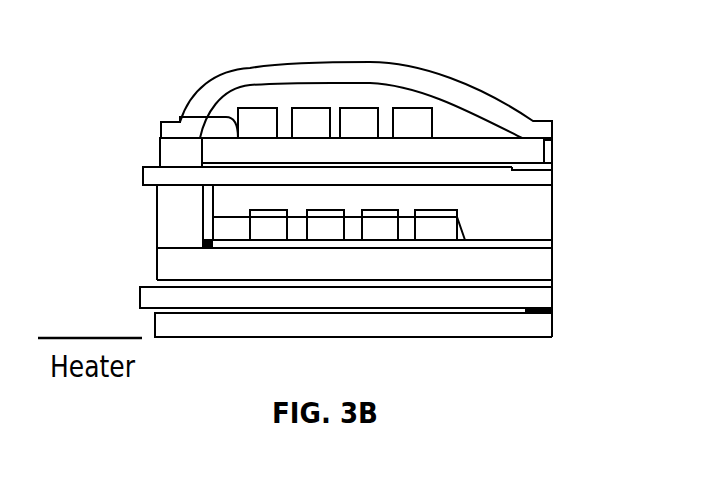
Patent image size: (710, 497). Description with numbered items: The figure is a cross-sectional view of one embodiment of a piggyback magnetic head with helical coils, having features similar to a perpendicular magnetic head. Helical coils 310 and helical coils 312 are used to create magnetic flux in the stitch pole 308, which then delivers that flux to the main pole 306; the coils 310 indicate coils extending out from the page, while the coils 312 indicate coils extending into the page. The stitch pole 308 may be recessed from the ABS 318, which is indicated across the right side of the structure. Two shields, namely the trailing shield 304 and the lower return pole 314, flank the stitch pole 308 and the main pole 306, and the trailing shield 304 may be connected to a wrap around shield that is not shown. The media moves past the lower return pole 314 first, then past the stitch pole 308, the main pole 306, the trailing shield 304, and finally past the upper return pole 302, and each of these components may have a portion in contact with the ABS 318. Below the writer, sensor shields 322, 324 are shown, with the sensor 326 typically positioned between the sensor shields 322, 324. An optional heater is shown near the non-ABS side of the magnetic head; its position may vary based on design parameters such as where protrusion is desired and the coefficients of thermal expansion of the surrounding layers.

The upper return pole 302 is at (485, 91).
The trailing shield 304 is at (553, 152).
The main pole 306 is at (555, 170).
The stitch pole 308 is at (503, 186).
The helical coils 310 is at (182, 117).
The helical coils 312 is at (250, 205).
The lower return pole 314 is at (392, 272).
The ABS 318 is at (557, 253).
The sensor shield 322 is at (139, 296).
The sensor shield 324 is at (154, 323).
The sensor 326 is at (545, 308).